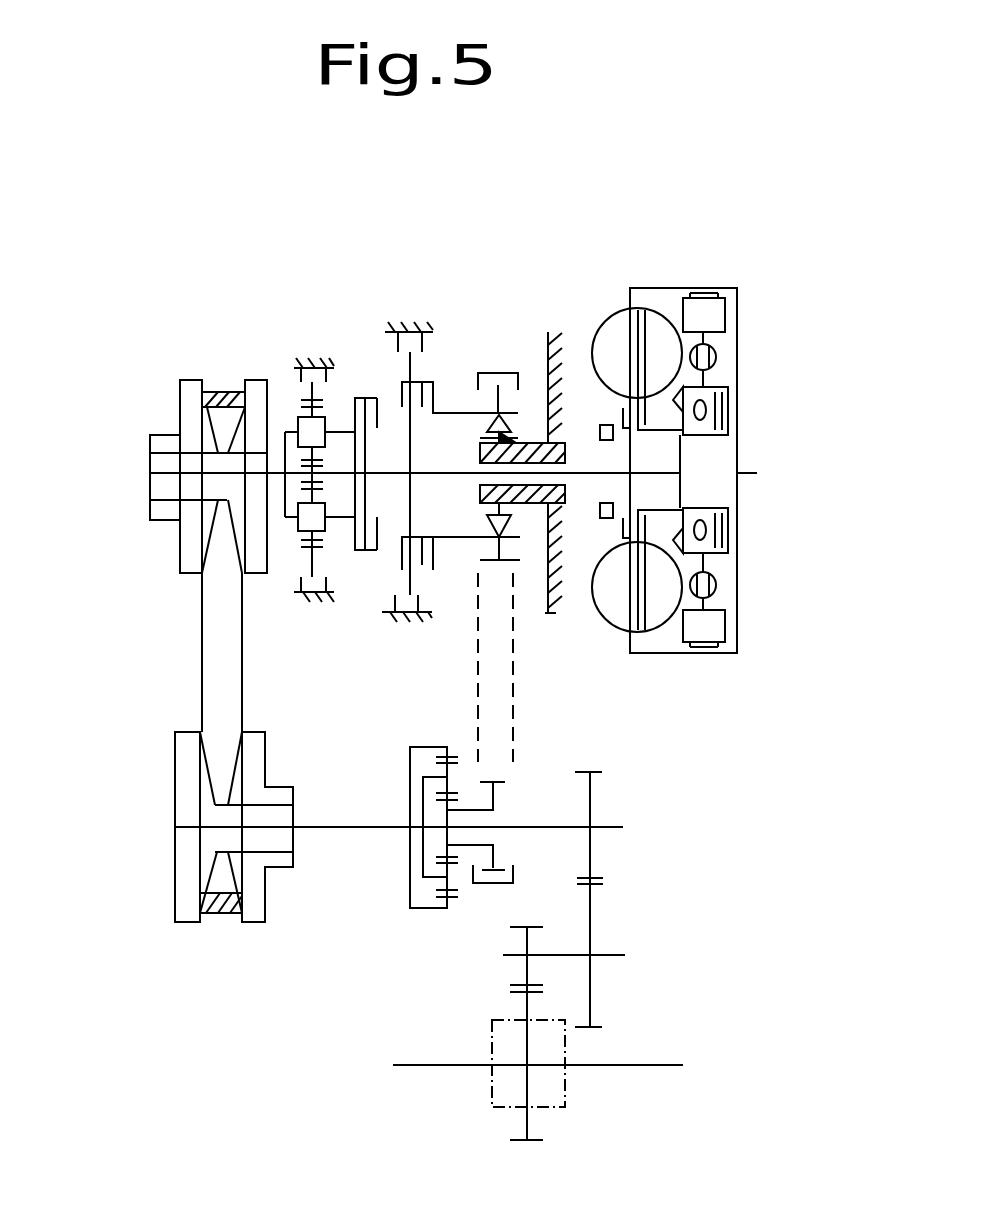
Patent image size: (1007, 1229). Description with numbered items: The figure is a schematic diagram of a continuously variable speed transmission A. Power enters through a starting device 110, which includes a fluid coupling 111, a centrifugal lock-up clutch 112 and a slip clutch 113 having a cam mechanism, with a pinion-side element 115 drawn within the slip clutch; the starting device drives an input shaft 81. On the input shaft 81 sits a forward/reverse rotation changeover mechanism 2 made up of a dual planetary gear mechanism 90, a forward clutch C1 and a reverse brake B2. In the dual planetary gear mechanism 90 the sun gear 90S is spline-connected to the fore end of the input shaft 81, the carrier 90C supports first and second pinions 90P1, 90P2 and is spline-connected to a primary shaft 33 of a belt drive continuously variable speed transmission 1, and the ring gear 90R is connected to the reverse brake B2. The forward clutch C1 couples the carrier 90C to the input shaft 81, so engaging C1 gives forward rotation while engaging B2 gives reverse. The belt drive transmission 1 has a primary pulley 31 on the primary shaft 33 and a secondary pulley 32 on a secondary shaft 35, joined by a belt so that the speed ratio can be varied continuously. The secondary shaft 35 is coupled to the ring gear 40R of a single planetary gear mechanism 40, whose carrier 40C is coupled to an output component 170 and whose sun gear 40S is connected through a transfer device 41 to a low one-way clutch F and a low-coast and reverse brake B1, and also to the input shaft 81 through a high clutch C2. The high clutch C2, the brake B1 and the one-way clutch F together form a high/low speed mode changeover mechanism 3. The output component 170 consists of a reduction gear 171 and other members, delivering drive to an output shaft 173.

The continuously variable speed transmission A is at (203, 265).
The belt drive continuously variable speed transmission 1 is at (167, 458).
The primary pulley sheave 31 is at (141, 422).
The primary shaft 33 is at (150, 468).
The secondary pulley 32 is at (171, 795).
The secondary shaft 35 is at (345, 828).
The forward/reverse rotation changeover mechanism 2 is at (275, 440).
The dual planetary gear mechanism 90 is at (275, 464).
The first pinion 90P1 is at (297, 458).
The second pinion 90P2 is at (300, 425).
The ring gear 90R is at (330, 525).
The sun gear 90S is at (355, 530).
The carrier 90C is at (290, 560).
The reverse brake B2 is at (313, 366).
The forward clutch C1 is at (366, 398).
The high/low speed mode changeover mechanism 3 is at (473, 419).
The low-coast and reverse brake B1 is at (410, 332).
The high clutch C2 is at (433, 381).
The low one-way clutch F is at (548, 418).
The input shaft 81 is at (585, 470).
The starting device 110 is at (707, 430).
The fluid coupling 111 is at (612, 302).
The centrifugal lock-up clutch 112 is at (718, 322).
The slip clutch 113 is at (750, 456).
The pinion shaft 115 is at (703, 415).
The single planetary gear mechanism 40 is at (419, 809).
The ring gear 40R is at (435, 747).
The carrier 40C is at (423, 850).
The sun gear 40S is at (470, 866).
The transfer device 41 is at (520, 686).
The output component 170 is at (600, 820).
The reduction gear 171 is at (600, 930).
The output shaft 173 is at (432, 1066).